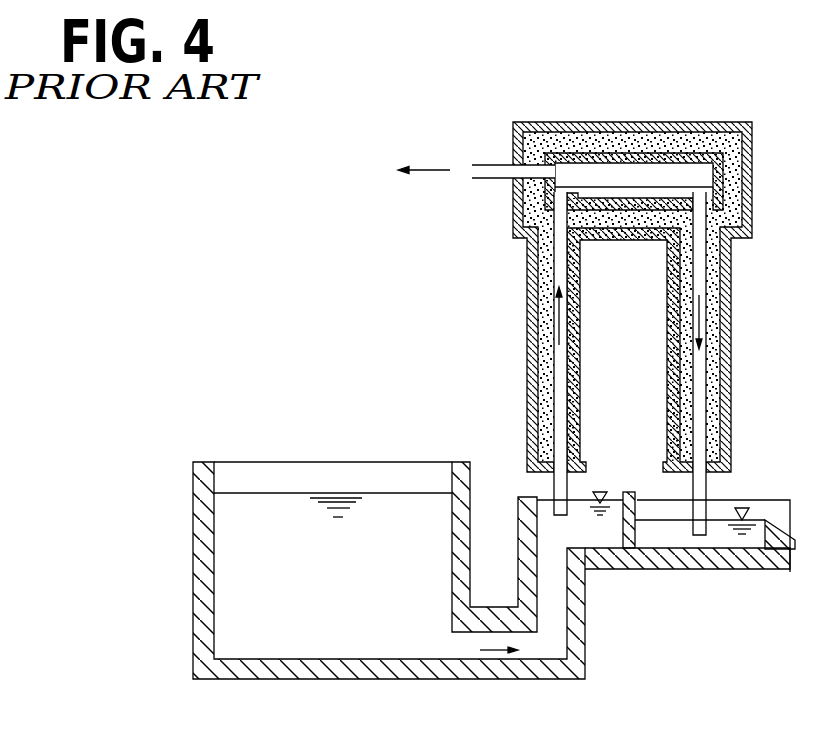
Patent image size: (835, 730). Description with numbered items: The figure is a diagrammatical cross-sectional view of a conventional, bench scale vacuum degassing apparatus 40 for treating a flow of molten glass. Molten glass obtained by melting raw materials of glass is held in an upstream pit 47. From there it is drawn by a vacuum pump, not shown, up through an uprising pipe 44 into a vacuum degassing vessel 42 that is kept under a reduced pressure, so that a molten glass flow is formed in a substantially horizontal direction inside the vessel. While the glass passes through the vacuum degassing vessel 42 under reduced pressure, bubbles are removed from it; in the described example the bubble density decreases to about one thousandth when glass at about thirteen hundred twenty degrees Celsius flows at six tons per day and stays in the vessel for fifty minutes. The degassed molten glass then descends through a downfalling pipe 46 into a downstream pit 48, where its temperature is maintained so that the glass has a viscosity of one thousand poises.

The vacuum degassing apparatus 40 is at (543, 108).
The vacuum degassing vessel 42 is at (667, 125).
The uprising pipe 44 is at (555, 373).
The downfalling pipe 46 is at (702, 368).
The upstream pit 47 is at (530, 543).
The downstream pit 48 is at (753, 573).